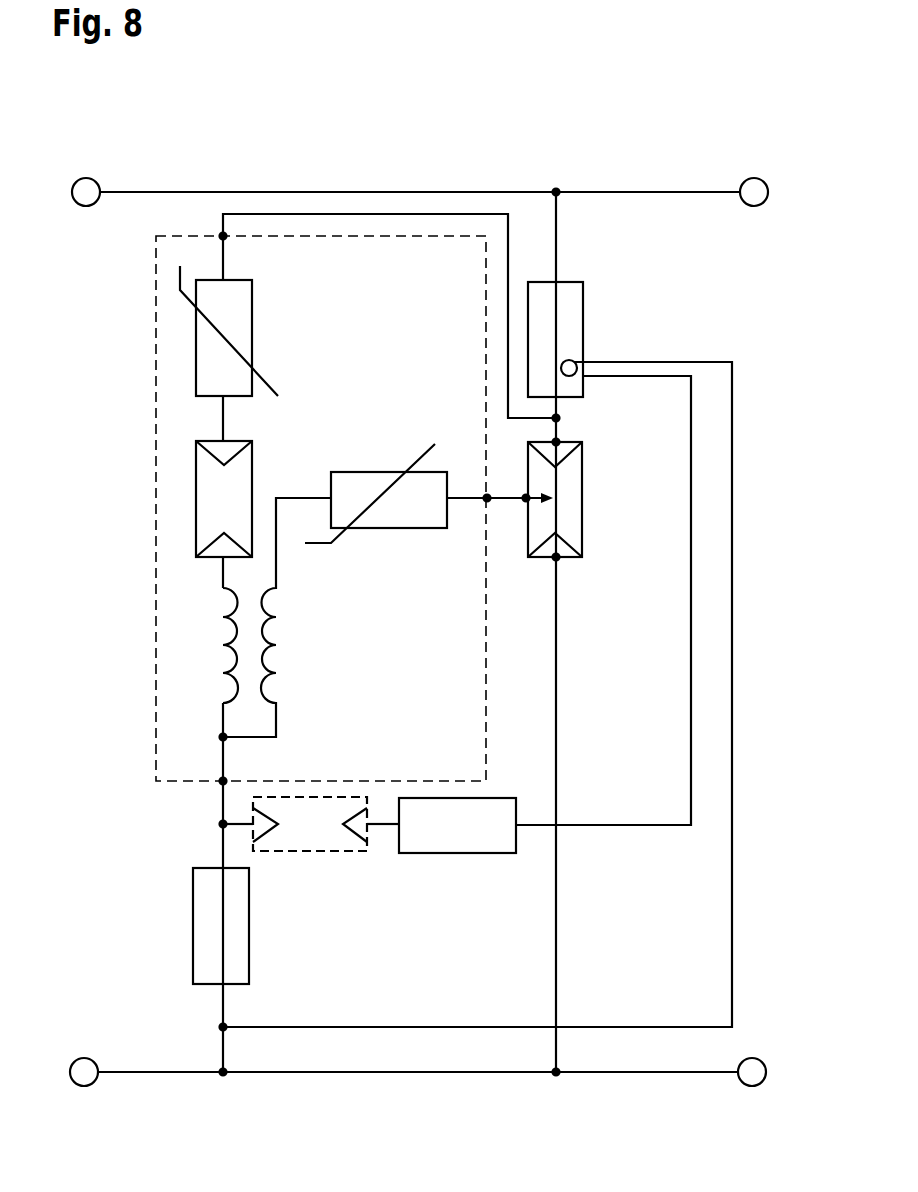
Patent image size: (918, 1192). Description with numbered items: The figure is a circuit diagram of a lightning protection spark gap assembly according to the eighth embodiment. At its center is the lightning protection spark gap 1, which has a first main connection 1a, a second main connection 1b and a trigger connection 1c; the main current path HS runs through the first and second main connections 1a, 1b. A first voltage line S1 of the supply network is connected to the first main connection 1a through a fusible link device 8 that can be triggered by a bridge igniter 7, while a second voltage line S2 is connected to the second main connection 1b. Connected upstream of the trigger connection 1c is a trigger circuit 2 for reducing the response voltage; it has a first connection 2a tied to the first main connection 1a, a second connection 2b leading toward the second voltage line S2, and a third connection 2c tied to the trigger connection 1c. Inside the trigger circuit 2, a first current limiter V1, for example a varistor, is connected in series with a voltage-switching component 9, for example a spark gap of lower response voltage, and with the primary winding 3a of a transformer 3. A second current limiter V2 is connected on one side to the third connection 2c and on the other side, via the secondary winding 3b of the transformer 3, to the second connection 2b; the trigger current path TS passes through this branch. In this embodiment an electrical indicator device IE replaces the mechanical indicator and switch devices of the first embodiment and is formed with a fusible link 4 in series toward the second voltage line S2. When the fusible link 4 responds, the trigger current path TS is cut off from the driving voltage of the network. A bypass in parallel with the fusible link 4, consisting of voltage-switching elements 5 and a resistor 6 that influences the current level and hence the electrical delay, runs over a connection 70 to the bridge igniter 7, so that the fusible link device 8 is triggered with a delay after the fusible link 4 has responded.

The lightning protection spark gap 1 is at (582, 498).
The first main connection 1a is at (556, 442).
The second main connection 1b is at (556, 558).
The trigger connection 1c is at (526, 498).
The trigger circuit 2 is at (156, 418).
The first connection 2a is at (223, 236).
The second connection 2b is at (223, 781).
The third connection 2c is at (487, 498).
The transformer 3 is at (240, 631).
The primary winding 3a is at (233, 613).
The secondary winding 3b is at (268, 613).
The fusible link 4 is at (193, 920).
The voltage-switching elements 5 is at (303, 851).
The resistor 6 is at (450, 853).
The bridge igniter 7 is at (568, 360).
The fusible link device 8 is at (582, 309).
The voltage-switching component 9 is at (196, 507).
The connection line 70 is at (637, 825).
The first current limiter V1 is at (252, 337).
The second current limiter V2 is at (382, 472).
The trigger current path TS is at (315, 498).
The main current path HS is at (556, 746).
The first voltage line S1 is at (315, 192).
The second voltage line S2 is at (315, 1072).
The electrical indicator device IE is at (170, 960).